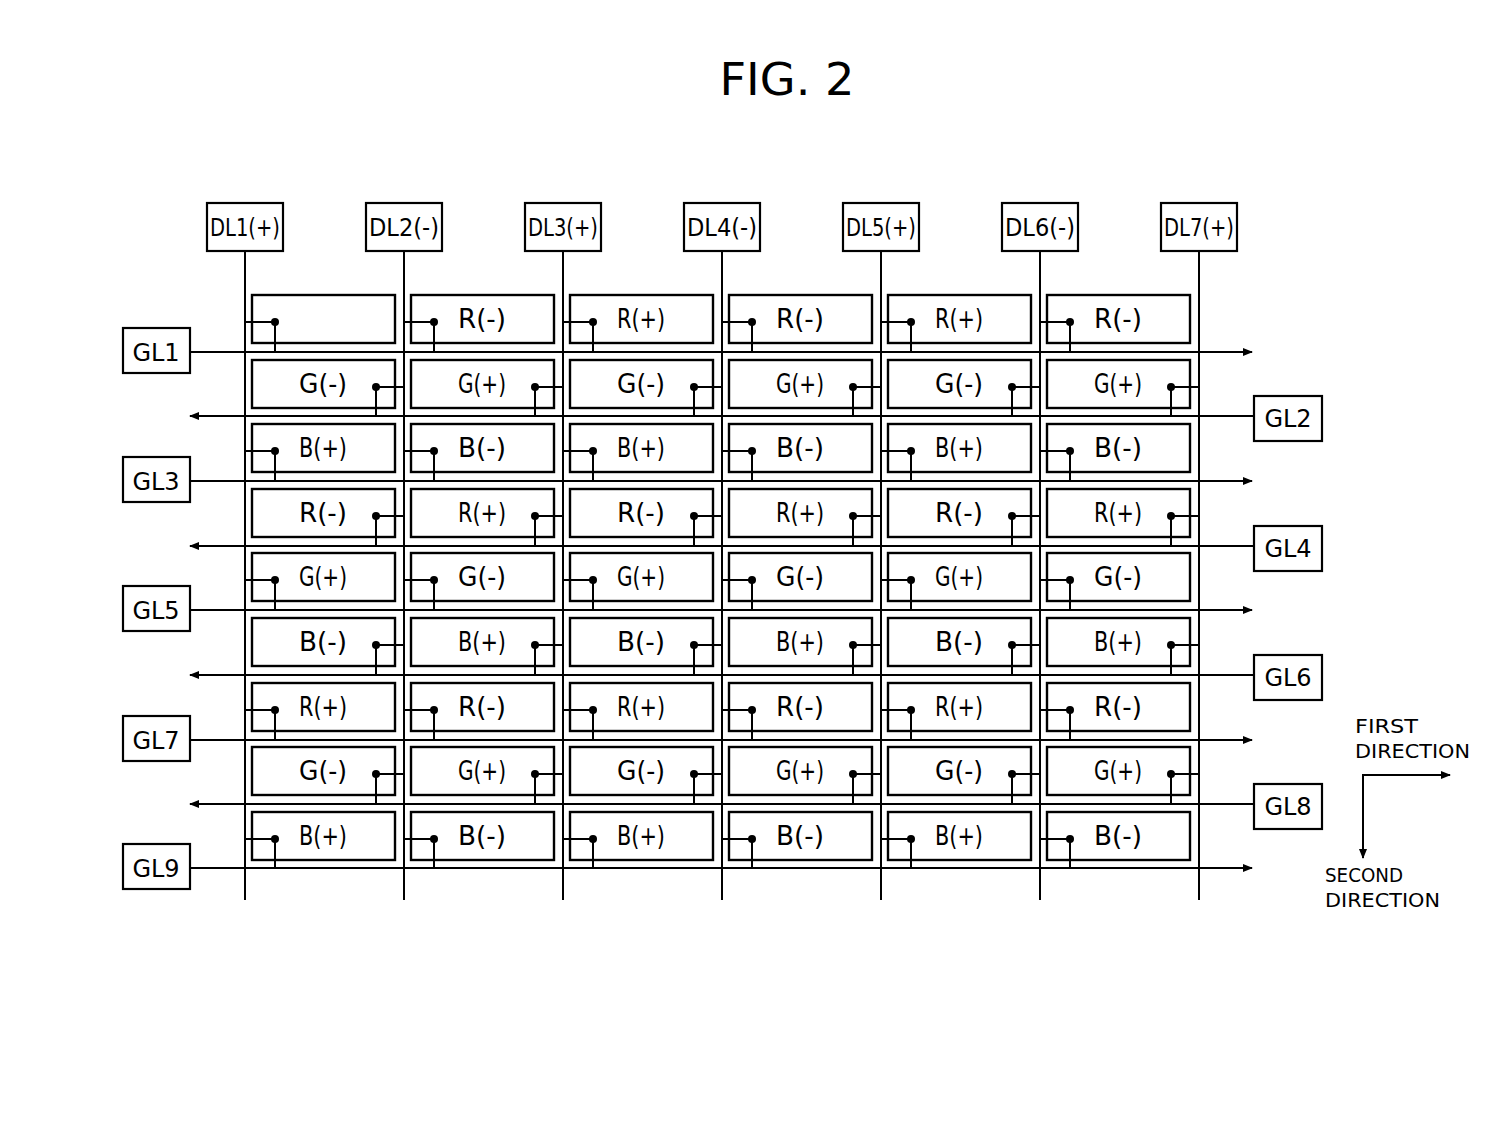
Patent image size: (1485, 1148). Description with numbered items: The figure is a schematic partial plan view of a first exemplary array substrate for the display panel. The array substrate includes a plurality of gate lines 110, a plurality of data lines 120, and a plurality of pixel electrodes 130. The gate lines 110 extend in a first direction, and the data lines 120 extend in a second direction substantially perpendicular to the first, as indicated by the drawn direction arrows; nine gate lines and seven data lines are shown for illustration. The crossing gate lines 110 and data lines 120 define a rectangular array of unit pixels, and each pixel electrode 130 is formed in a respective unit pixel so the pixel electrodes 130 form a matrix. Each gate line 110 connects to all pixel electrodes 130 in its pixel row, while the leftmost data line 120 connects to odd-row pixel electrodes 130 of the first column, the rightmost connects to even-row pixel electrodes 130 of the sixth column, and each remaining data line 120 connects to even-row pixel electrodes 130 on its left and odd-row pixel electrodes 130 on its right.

The gate line 110 is at (232, 346).
The data line 120 is at (240, 268).
The pixel electrode 130 is at (322, 292).